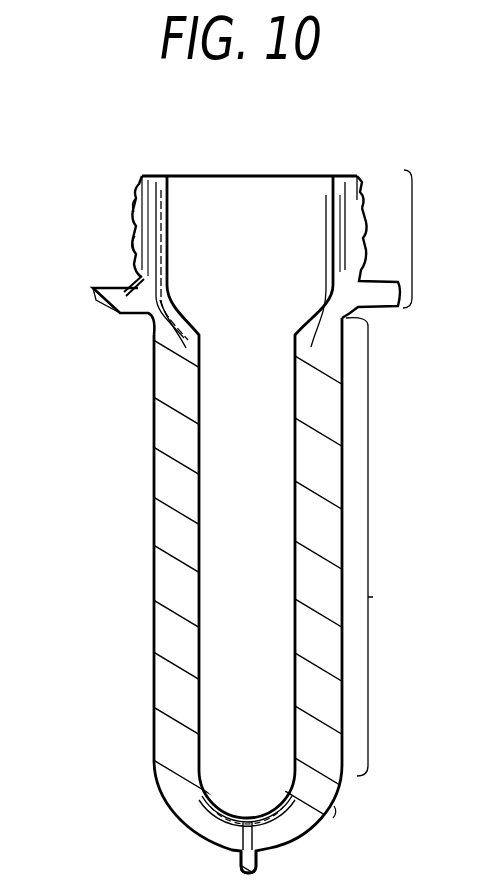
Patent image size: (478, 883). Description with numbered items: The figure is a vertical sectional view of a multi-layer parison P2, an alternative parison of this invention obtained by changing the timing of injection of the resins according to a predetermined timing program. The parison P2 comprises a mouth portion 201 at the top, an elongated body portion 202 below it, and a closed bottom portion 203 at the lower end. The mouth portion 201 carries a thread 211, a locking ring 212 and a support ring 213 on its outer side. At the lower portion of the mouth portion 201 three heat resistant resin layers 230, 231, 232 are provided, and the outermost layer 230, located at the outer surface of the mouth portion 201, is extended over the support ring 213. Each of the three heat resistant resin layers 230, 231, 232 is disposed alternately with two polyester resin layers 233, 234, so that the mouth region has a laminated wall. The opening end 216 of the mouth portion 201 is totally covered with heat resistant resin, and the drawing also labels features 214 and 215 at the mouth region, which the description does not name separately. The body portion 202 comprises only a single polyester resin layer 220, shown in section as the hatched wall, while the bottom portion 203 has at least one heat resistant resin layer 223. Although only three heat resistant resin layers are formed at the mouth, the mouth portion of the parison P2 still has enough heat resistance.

The mouth portion 201 is at (416, 240).
The body portion 202 is at (373, 597).
The bottom portion 203 is at (315, 844).
The thread 211 is at (136, 196).
The locking ring 212 is at (131, 250).
The support ring 213 is at (89, 296).
The seal lip 214 is at (363, 203).
The inner liner 215 is at (328, 340).
The opening end 216 is at (343, 175).
The polyester resin layer 220 is at (161, 607).
The heat resistant resin layer 223 is at (194, 828).
The outermost heat resistant resin layer 230 is at (137, 205).
The heat resistant resin layer 231 is at (177, 278).
The heat resistant resin layer 232 is at (166, 205).
The polyester resin layer 233 is at (150, 255).
The polyester resin layer 234 is at (165, 258).
The parison P2 is at (388, 497).